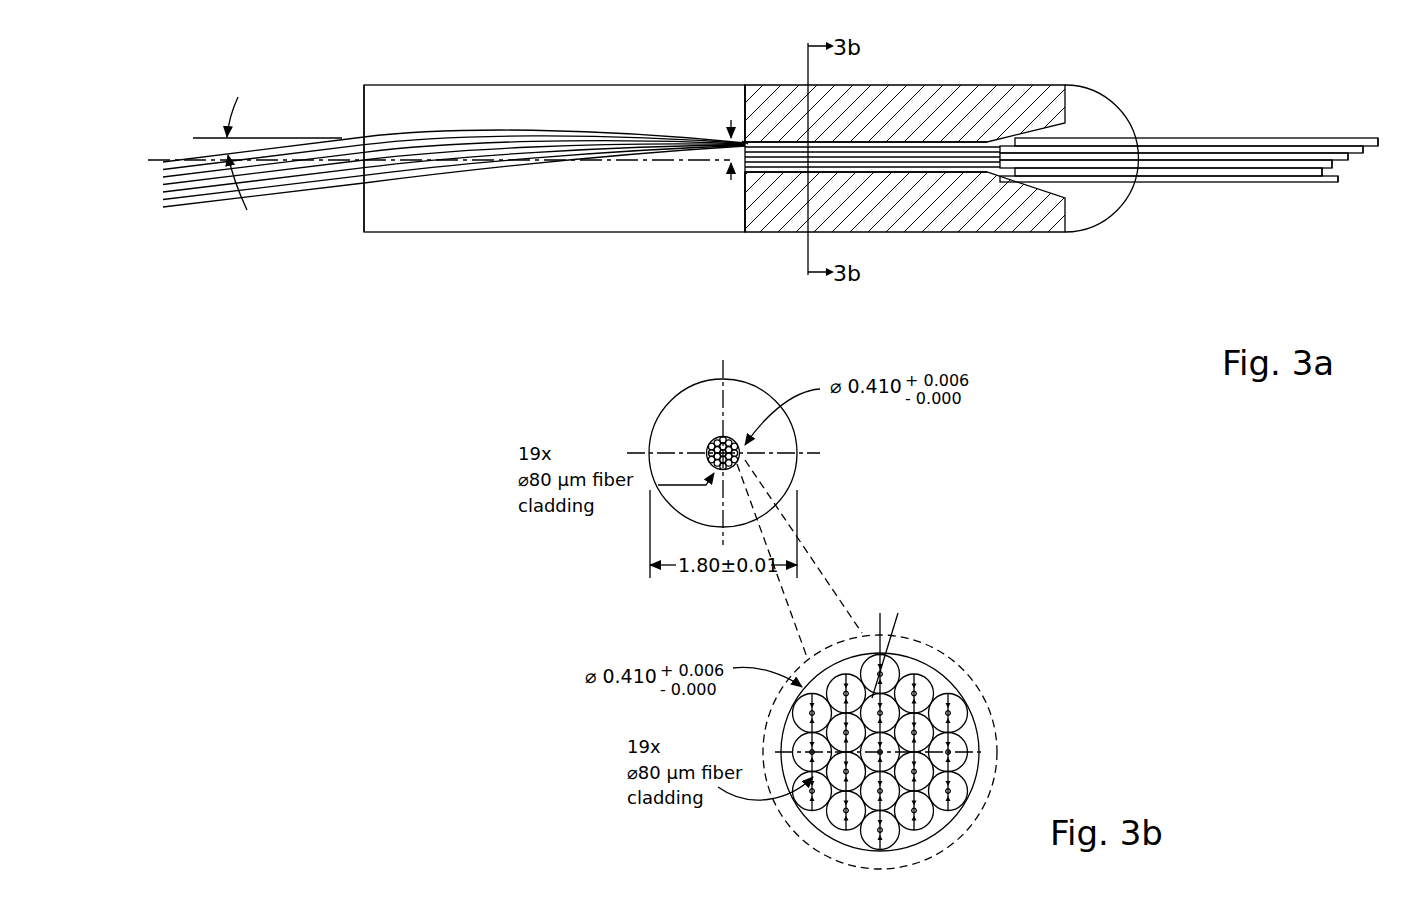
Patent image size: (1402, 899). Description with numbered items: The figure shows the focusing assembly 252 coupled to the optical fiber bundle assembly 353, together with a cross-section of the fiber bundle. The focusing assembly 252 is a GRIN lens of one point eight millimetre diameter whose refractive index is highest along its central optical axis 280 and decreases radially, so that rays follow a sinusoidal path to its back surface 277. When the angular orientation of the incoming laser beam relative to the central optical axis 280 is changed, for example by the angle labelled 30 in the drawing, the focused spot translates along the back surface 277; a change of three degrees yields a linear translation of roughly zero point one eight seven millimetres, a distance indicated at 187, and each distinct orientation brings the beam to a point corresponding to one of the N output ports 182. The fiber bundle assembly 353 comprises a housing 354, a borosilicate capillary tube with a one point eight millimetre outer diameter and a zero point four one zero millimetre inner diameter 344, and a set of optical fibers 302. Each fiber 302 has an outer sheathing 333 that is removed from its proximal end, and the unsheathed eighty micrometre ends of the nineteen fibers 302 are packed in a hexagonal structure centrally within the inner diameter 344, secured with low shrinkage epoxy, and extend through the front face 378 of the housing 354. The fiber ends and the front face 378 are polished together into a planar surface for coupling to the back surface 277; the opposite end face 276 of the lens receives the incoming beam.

In FIG. 3A, the fiber entrance angle 30 is at (267, 153).
In FIG. 3A, the focusing assembly 252 is at (468, 220).
In FIG. 3A, the entrance face of holder 276 is at (364, 122).
In FIG. 3A, the central optical axis 280 is at (640, 160).
In FIG. 3A, the back surface 277 is at (745, 112).
In FIG. 3A, the output ports 182 is at (743, 144).
In FIG. 3A, the bundle height 187 is at (725, 163).
In FIG. 3A, the front face 378 is at (745, 200).
In FIG. 3A, the housing 354 is at (865, 100).
In FIG. 3B, the housing 354 is at (692, 395).
In FIG. 3A, the inner diameter 344 is at (876, 176).
In FIG. 3B, the inner diameter 344 is at (728, 440).
In FIG. 3A, the optical fibers 302 is at (857, 150).
In FIG. 3B, the optical fibers 302 is at (922, 680).
In FIG. 3A, the optical fiber bundle assembly 353 is at (1113, 87).
In FIG. 3A, the outer sheathing 333 is at (1377, 138).